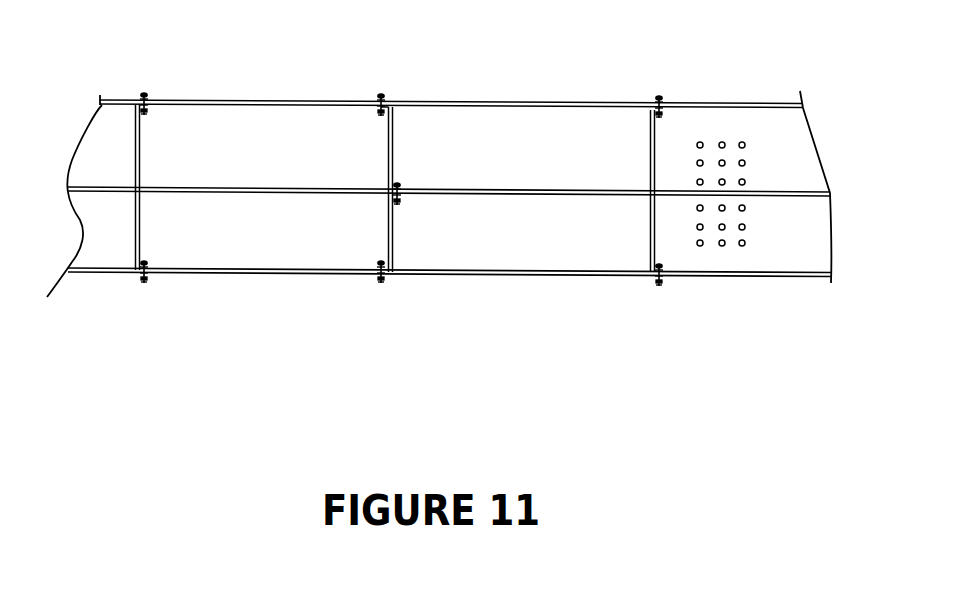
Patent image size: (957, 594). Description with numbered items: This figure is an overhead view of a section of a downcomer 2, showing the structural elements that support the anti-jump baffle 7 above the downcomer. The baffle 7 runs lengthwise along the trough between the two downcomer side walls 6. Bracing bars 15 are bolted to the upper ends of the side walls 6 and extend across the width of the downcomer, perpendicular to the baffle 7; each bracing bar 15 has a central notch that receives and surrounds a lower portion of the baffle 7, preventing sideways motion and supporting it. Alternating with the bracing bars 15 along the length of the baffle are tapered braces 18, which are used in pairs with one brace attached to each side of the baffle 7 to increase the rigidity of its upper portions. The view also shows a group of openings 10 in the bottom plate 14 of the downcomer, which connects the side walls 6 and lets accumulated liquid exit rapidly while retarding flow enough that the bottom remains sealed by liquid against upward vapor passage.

The downcomer 2 is at (749, 98).
The downcomer side walls 6 is at (522, 95).
The anti-jump baffle 7 is at (193, 182).
The openings 10 is at (720, 250).
The bottom plate 14 is at (498, 241).
The bracing bar 15 is at (129, 135).
The tapered brace 18 is at (397, 143).